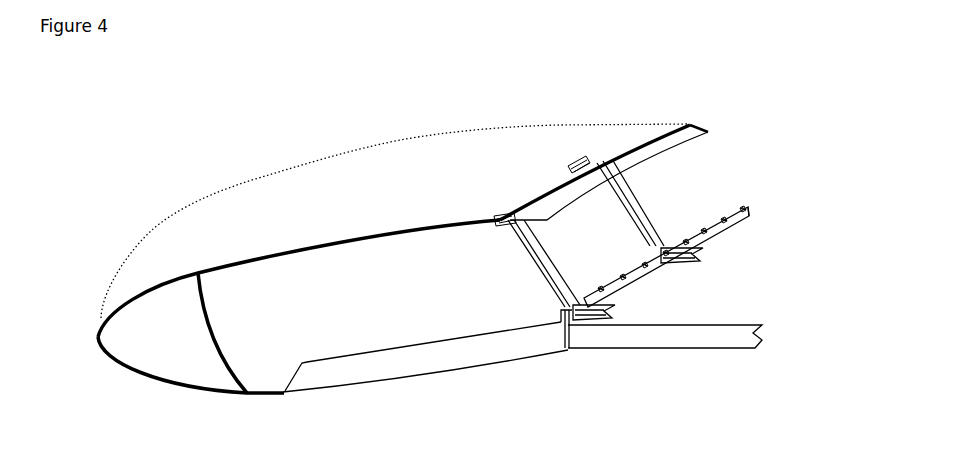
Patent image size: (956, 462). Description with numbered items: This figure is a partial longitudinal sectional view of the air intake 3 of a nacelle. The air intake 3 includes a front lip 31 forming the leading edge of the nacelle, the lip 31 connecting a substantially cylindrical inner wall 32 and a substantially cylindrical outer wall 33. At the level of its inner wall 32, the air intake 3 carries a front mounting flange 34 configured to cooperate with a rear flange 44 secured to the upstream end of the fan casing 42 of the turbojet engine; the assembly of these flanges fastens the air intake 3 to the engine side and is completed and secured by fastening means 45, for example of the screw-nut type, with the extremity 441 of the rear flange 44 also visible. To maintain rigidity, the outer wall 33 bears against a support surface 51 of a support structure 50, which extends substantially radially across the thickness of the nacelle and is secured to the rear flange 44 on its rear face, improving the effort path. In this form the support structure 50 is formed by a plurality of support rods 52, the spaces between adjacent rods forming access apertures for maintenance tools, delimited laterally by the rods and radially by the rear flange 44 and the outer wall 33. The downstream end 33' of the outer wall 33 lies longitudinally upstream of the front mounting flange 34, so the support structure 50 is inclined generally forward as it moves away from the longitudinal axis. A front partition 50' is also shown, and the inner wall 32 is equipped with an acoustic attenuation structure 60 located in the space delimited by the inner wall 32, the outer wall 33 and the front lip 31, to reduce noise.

The air intake 3 is at (789, 106).
The front lip 31 is at (97, 346).
The inner wall 32 is at (367, 386).
The outer wall 33 is at (394, 221).
The downstream end of the outer wall 33' is at (625, 145).
The front mounting flange 34 is at (557, 307).
The fan casing 42 is at (680, 335).
The rear flange 44 is at (740, 206).
The beam end 441 is at (752, 210).
The fastening means 45 is at (744, 220).
The support structure 50 is at (610, 233).
The front partition 50' is at (198, 355).
The support surface 51 is at (496, 214).
The support rods 52 is at (595, 283).
The acoustic attenuation structure 60 is at (460, 350).